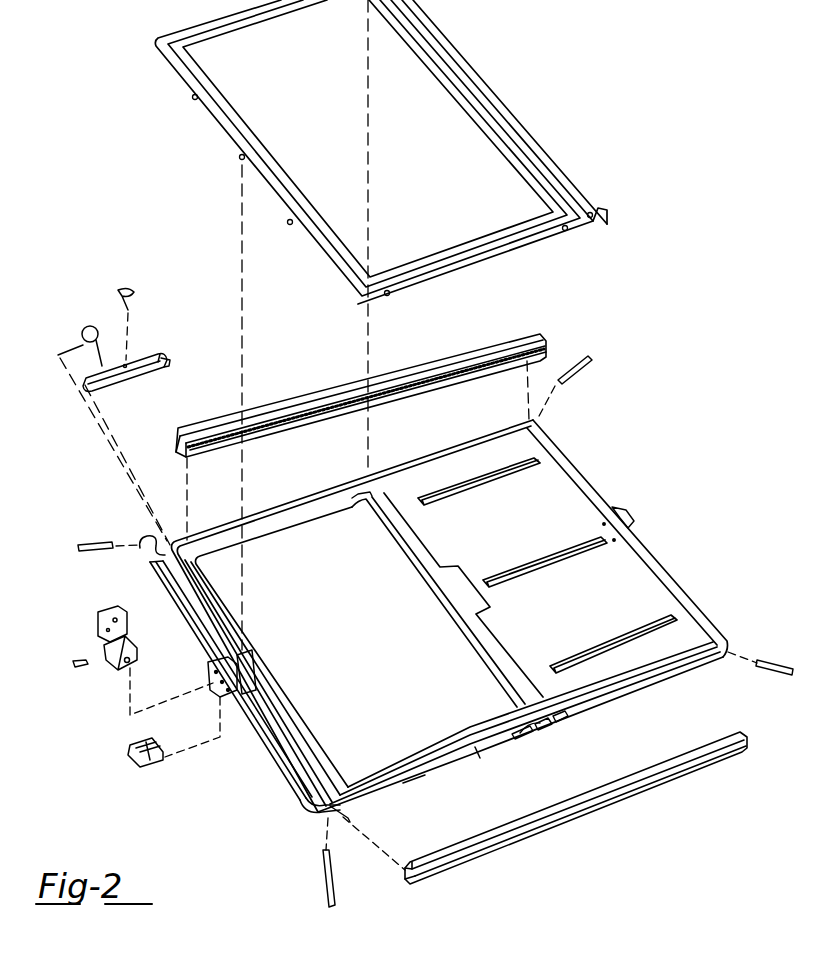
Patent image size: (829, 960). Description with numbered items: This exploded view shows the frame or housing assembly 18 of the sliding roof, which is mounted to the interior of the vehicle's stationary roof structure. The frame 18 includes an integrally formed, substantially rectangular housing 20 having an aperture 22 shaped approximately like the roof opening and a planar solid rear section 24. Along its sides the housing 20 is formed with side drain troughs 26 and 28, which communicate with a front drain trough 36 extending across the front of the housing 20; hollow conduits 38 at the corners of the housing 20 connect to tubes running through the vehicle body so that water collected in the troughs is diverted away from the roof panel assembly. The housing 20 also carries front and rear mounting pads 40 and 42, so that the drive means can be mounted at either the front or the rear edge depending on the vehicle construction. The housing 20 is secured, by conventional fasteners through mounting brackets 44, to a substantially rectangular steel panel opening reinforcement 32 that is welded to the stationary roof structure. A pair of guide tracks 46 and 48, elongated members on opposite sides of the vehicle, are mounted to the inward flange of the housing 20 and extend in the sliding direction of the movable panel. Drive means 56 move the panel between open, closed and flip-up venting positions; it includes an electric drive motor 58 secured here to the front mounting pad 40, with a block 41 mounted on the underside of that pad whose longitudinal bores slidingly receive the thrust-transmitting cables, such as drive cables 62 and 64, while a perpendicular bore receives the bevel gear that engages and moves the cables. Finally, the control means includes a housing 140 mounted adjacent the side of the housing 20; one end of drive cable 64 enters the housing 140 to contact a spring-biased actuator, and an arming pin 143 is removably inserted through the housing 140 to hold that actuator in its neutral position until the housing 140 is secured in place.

The frame or housing assembly 18 is at (495, 866).
The housing 20 is at (423, 783).
The aperture 22 is at (317, 772).
The planar solid rear section 24 is at (442, 641).
The side drain trough 26 is at (477, 747).
The side drain trough 28 is at (300, 512).
The panel opening reinforcement 32 is at (520, 250).
The front drain trough 36 is at (250, 686).
The hollow conduit 38 is at (90, 556).
The front mounting pad 40 is at (208, 677).
The block 41 is at (128, 752).
The rear mounting pad 42 is at (638, 521).
The mounting bracket 44 is at (558, 728).
The guide track 46 is at (562, 829).
The guide track 48 is at (302, 384).
The drive means 56 is at (72, 663).
The electric drive motor 58 is at (100, 612).
The track 62 is at (160, 602).
The drive cable 64 is at (58, 355).
The housing 140 is at (120, 388).
The arming pin 143 is at (118, 291).